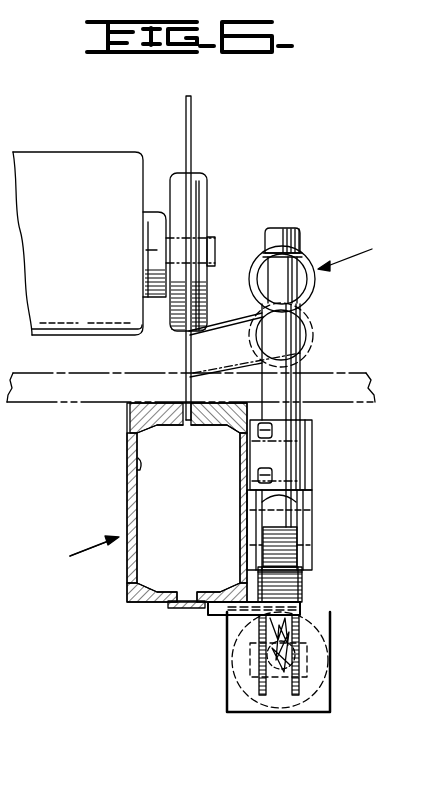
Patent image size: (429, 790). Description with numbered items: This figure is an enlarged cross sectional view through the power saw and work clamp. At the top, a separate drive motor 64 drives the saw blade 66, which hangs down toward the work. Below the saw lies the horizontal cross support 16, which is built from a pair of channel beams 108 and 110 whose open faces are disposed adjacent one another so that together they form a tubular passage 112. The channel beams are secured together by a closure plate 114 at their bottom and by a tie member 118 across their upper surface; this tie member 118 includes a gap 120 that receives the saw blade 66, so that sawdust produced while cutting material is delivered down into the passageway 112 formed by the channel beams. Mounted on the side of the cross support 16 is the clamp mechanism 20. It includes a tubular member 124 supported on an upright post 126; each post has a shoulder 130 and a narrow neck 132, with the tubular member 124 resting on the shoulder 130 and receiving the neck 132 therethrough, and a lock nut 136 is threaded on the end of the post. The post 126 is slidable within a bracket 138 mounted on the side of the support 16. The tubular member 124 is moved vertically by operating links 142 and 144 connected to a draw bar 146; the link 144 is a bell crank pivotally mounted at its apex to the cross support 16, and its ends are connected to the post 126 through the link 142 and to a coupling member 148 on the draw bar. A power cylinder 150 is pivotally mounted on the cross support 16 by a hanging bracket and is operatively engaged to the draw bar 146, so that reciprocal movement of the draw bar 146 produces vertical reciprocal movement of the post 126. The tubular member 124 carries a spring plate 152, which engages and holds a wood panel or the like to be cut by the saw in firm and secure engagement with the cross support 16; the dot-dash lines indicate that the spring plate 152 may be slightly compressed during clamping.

The horizontal cross support 16 is at (148, 502).
The clamp mechanism 20 is at (357, 253).
The drive motor 64 is at (60, 162).
The saw blade 66 is at (192, 140).
The channel beam 108 is at (137, 497).
The channel beam 110 is at (240, 526).
The tubular passage 112 is at (138, 461).
The closure plate 114 is at (172, 606).
The tie member 118 is at (138, 410).
The gap 120 is at (188, 421).
The tubular member 124 is at (303, 262).
The upright post 126 is at (283, 378).
The shoulder 130 is at (292, 312).
The narrow neck 132 is at (268, 285).
The lock nut 136 is at (272, 232).
The bracket 138 is at (280, 457).
The operating link 142 is at (303, 525).
The operating link (bell crank) 144 is at (290, 563).
The draw bar 146 is at (250, 660).
The coupling member 148 is at (305, 647).
The power cylinder 150 is at (320, 663).
The spring plate 152 is at (233, 326).